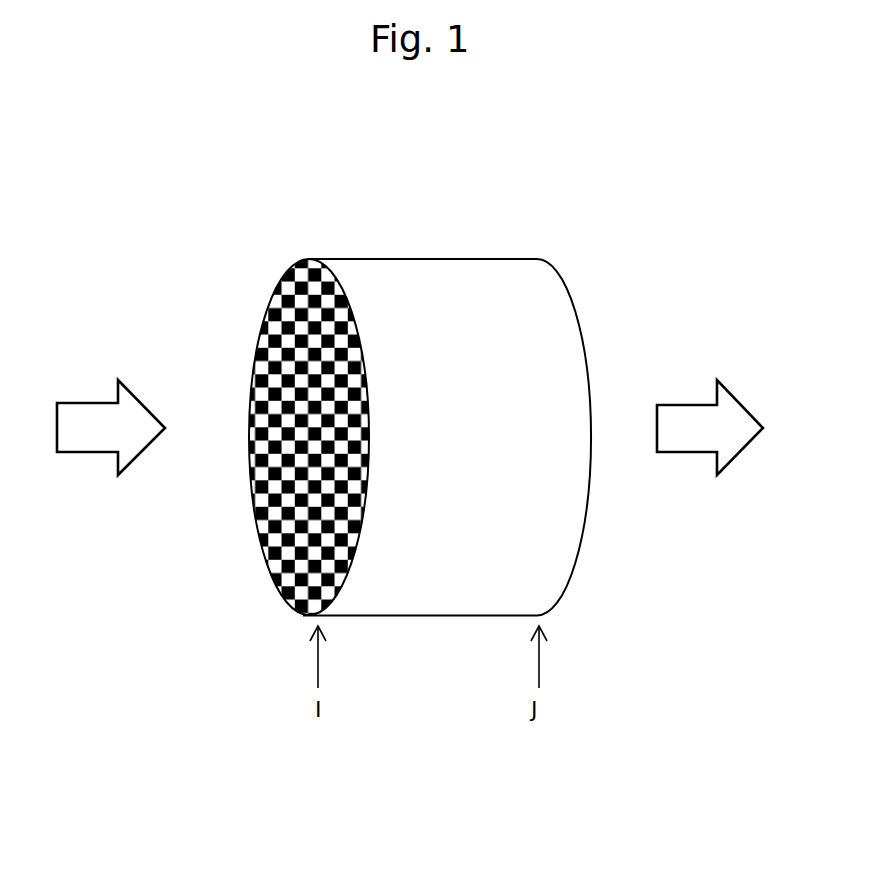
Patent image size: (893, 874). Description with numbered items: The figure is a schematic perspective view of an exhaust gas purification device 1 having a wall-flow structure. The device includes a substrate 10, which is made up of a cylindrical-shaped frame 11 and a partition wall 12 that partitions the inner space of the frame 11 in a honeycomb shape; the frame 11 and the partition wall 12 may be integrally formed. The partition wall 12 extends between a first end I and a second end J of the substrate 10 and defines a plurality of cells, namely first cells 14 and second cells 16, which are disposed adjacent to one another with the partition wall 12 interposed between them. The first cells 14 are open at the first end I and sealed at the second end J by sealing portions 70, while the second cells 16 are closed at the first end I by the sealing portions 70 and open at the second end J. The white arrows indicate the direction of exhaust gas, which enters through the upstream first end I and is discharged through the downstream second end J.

The exhaust gas purification device 1 is at (407, 377).
The substrate 10 is at (572, 368).
The frame 11 is at (372, 270).
The partition wall 12 is at (298, 297).
The first cells 14 is at (275, 352).
The second cells 16 is at (288, 382).
The sealing portions 70 is at (290, 330).